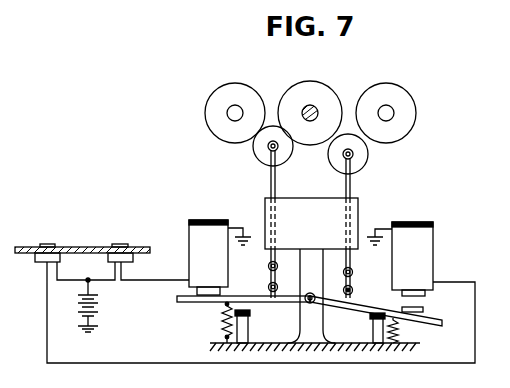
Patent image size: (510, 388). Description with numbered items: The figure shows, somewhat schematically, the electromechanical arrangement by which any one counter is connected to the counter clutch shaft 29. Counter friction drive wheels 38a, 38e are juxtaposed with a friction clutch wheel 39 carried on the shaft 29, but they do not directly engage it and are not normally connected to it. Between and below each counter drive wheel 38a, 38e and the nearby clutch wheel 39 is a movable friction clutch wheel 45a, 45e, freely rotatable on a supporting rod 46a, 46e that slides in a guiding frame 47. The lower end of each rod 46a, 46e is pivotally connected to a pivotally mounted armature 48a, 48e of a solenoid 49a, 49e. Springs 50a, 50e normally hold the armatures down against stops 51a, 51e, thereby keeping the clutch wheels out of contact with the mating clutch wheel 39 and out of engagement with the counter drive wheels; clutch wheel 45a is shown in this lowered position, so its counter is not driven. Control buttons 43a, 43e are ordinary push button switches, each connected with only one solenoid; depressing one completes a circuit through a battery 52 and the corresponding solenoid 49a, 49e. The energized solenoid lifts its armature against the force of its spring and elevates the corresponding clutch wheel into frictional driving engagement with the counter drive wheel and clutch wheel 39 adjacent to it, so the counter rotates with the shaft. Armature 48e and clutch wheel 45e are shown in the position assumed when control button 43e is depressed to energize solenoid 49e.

The counter clutch shaft 29 is at (316, 108).
The counter friction drive wheel 38a is at (409, 98).
The counter friction drive wheel 38e is at (208, 99).
The friction clutch wheel 39 is at (305, 83).
The control button 43a is at (46, 244).
The control button 43e is at (120, 244).
The friction clutch wheel 45a is at (366, 160).
The friction clutch wheel 45e is at (258, 153).
The supporting rod 46a is at (353, 186).
The supporting rod 46e is at (270, 191).
The guiding frame 47 is at (359, 212).
The armature 48a is at (441, 320).
The armature 48e is at (205, 302).
The solenoid 49a is at (433, 248).
The solenoid 49e is at (189, 268).
The spring 50a is at (396, 332).
The spring 50e is at (224, 327).
The stop 51a is at (373, 319).
The stop 51e is at (250, 321).
The battery 52 is at (100, 302).